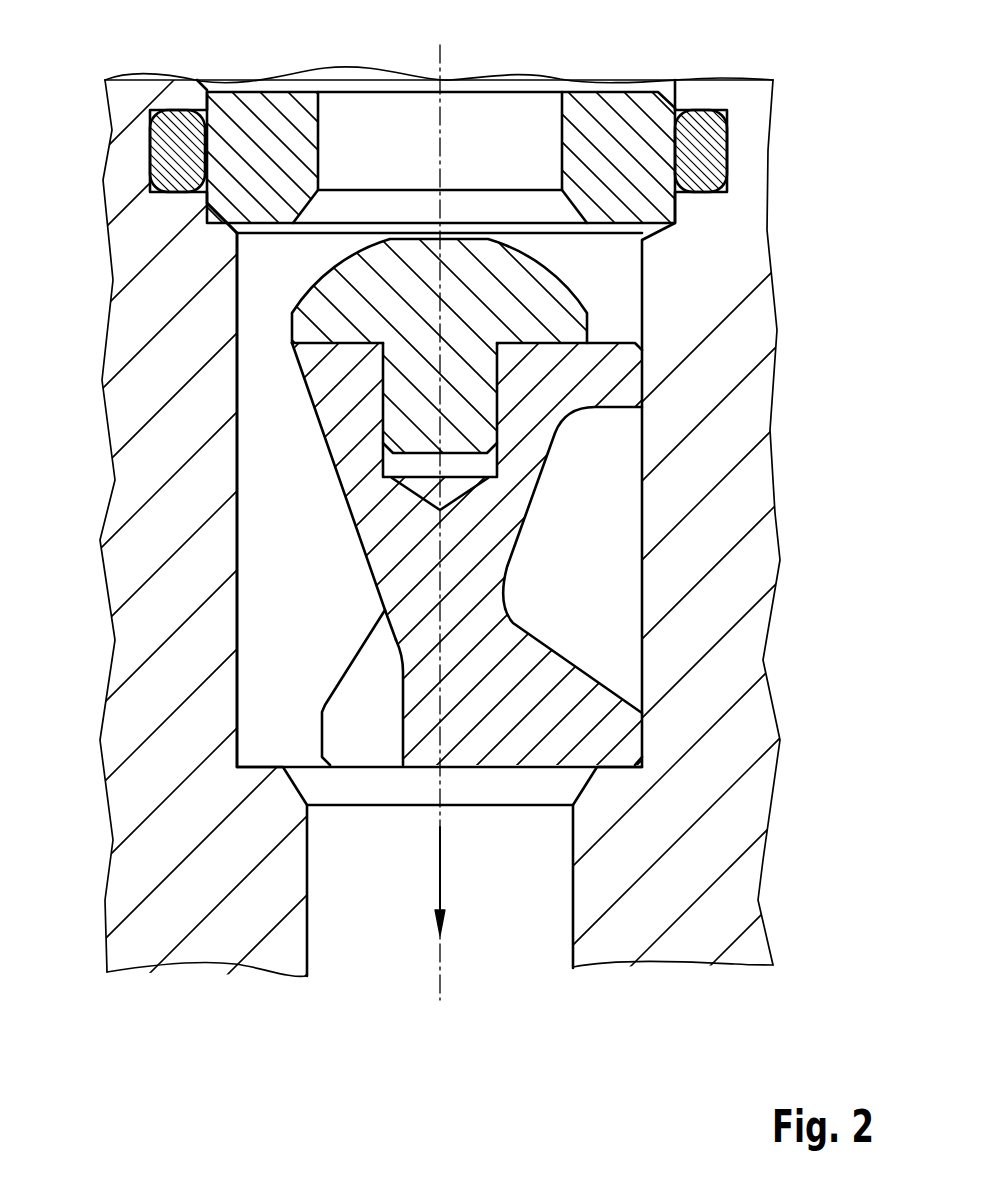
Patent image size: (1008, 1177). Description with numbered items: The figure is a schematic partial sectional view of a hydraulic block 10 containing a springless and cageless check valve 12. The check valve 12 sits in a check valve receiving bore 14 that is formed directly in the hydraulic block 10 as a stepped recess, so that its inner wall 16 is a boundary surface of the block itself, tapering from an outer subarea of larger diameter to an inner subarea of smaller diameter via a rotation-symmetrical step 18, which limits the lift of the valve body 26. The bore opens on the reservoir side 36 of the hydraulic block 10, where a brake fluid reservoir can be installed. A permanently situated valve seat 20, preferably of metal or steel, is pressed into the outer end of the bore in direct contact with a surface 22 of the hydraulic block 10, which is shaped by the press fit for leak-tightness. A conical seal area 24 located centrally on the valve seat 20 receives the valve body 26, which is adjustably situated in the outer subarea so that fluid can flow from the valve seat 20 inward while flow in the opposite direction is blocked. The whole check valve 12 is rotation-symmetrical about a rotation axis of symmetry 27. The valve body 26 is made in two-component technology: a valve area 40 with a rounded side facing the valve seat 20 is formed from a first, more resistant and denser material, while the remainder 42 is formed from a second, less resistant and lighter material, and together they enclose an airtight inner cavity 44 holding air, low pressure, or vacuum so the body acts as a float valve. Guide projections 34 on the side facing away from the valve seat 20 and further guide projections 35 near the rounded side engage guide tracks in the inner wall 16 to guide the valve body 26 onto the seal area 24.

The hydraulic block 10 is at (157, 342).
The check valve 12 is at (226, 410).
The check valve receiving bore 14 is at (440, 883).
The inner wall 16 is at (240, 449).
The step 18 is at (258, 767).
The valve seat 20 is at (615, 132).
The surface 22 is at (198, 208).
The seal area 24 is at (560, 206).
The valve body 26 is at (510, 517).
The rotation axis of symmetry 27 is at (440, 990).
The guide projections 34 is at (403, 703).
The further guide projections 35 is at (625, 376).
The reservoir side 36 is at (181, 78).
The valve area 40 is at (537, 293).
The remainder 42 is at (423, 575).
The inner cavity 44 is at (480, 468).